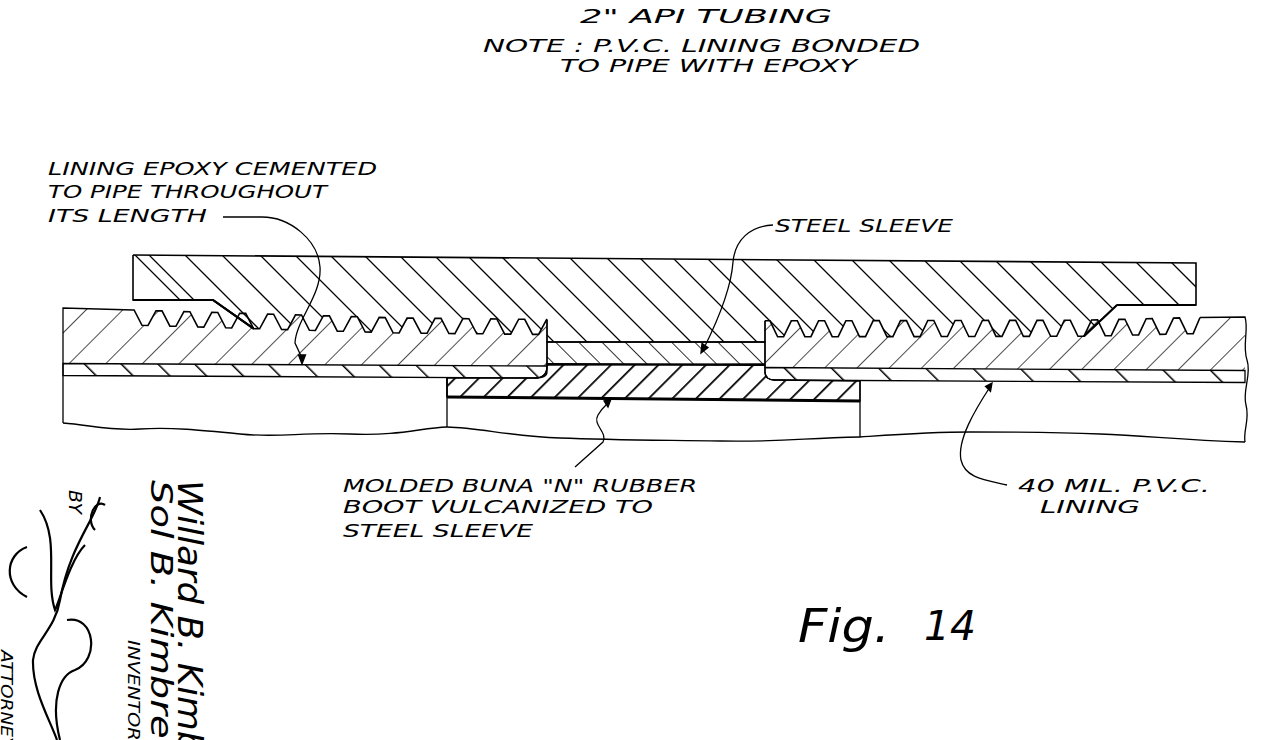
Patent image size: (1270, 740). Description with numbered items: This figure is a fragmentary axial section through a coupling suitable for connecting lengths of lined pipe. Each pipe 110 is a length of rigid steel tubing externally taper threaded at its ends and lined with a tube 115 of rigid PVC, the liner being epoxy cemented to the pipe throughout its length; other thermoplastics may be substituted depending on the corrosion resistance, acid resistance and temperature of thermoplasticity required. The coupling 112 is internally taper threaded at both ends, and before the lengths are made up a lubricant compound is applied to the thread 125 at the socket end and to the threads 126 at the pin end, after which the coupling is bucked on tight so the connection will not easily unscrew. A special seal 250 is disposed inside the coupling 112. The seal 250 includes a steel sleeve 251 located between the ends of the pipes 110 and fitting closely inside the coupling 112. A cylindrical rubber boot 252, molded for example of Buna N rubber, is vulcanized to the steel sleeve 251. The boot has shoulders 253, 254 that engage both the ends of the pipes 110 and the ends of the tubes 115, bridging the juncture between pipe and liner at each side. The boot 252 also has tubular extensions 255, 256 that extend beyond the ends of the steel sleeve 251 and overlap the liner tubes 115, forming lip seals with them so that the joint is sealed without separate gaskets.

The pipe 110 is at (90, 318).
The coupling 112 is at (520, 258).
The tube of rigid PVC 115 is at (110, 378).
The thread at the socket end 125 is at (368, 328).
The threads at the pin end 126 is at (378, 328).
The special seal 250 is at (693, 262).
The steel sleeve 251 is at (622, 349).
The cylindrical rubber boot 252 is at (653, 386).
The shoulder of the boot 253 is at (542, 400).
The shoulder of the boot 254 is at (771, 398).
The tubular extension of the boot 255 is at (473, 400).
The tubular extension of the boot 256 is at (822, 401).